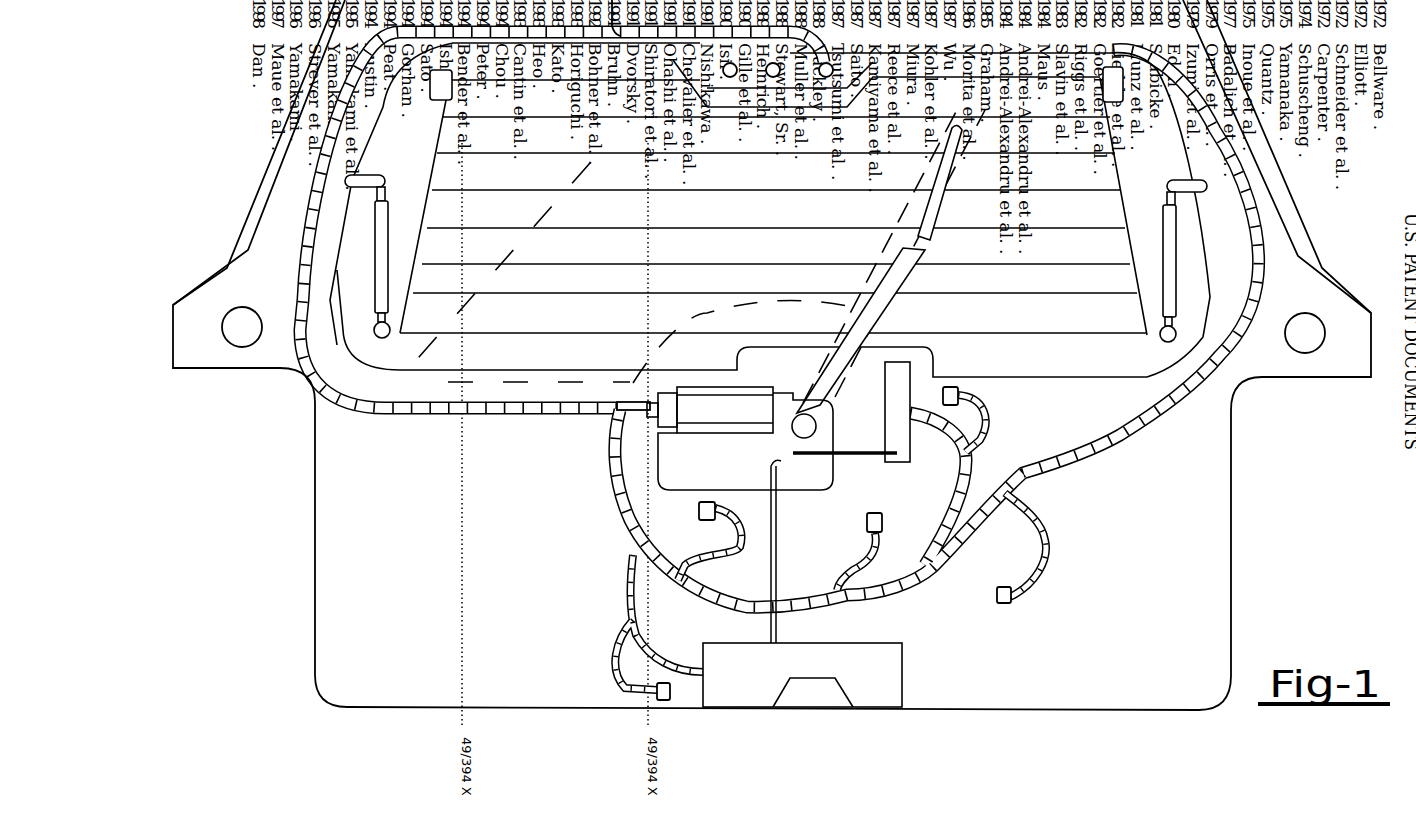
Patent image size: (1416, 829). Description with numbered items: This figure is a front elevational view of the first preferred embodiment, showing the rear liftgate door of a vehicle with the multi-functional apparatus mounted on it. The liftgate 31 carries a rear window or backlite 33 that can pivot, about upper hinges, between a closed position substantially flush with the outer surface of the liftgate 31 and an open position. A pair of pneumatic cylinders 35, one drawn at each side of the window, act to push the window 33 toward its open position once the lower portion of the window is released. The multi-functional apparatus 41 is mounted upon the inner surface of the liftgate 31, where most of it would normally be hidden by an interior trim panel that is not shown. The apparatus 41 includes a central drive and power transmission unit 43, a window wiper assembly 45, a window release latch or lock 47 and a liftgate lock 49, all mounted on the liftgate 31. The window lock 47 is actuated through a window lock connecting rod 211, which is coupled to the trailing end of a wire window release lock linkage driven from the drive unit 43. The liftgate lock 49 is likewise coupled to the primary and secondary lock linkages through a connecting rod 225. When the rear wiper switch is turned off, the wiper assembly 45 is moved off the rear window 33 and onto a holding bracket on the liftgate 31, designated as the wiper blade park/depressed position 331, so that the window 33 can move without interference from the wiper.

The liftgate 31 is at (437, 568).
The rear window 33 is at (550, 72).
The pneumatic cylinders 35 is at (383, 247).
The multi-functional apparatus 41 is at (580, 480).
The central drive and power transmission unit 43 is at (808, 512).
The window wiper assembly 45 is at (962, 212).
The window release latch or lock 47 is at (893, 377).
The liftgate lock 49 is at (867, 653).
The window lock connecting rod 211 is at (860, 455).
The connecting rod 225 is at (772, 632).
The wiper blade park/depressed position 331 is at (402, 372).